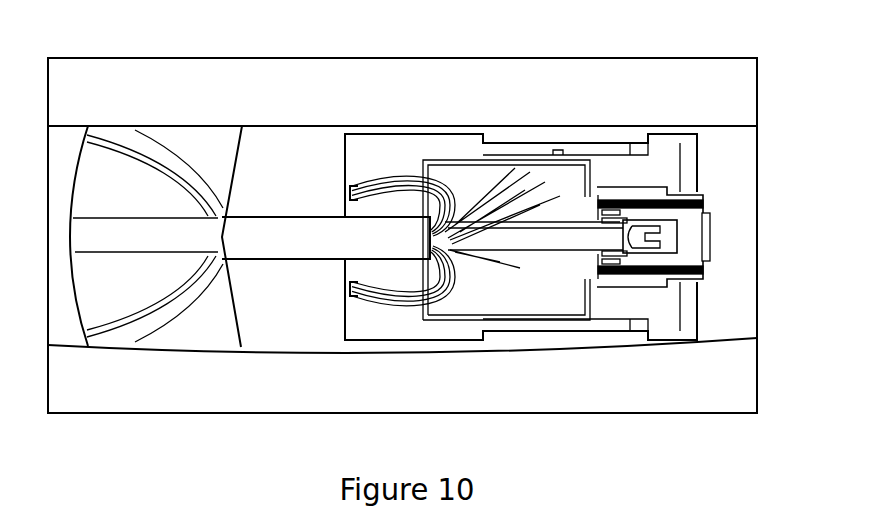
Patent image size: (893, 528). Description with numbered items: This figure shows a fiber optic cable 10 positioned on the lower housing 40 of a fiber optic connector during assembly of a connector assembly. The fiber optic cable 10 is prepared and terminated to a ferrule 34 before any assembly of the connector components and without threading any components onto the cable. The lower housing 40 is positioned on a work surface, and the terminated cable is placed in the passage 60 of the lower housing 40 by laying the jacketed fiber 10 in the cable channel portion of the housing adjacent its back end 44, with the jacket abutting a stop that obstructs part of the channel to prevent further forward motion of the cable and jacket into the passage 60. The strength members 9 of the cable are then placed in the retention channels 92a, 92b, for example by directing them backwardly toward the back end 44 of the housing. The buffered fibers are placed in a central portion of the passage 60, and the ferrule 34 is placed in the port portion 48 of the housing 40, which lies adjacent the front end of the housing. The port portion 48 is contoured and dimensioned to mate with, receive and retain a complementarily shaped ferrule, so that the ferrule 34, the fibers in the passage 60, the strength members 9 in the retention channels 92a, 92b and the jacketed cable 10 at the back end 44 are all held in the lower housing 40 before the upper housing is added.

The fiber optic cable 10 is at (275, 238).
The lower housing 40 is at (352, 140).
The back end 44 is at (343, 189).
The retention channel 92a is at (402, 173).
The retention channel 92b is at (375, 267).
The strength members 9 is at (462, 187).
The passage 60 is at (556, 217).
The port portion 48 is at (704, 195).
The ferrule 34 is at (709, 236).